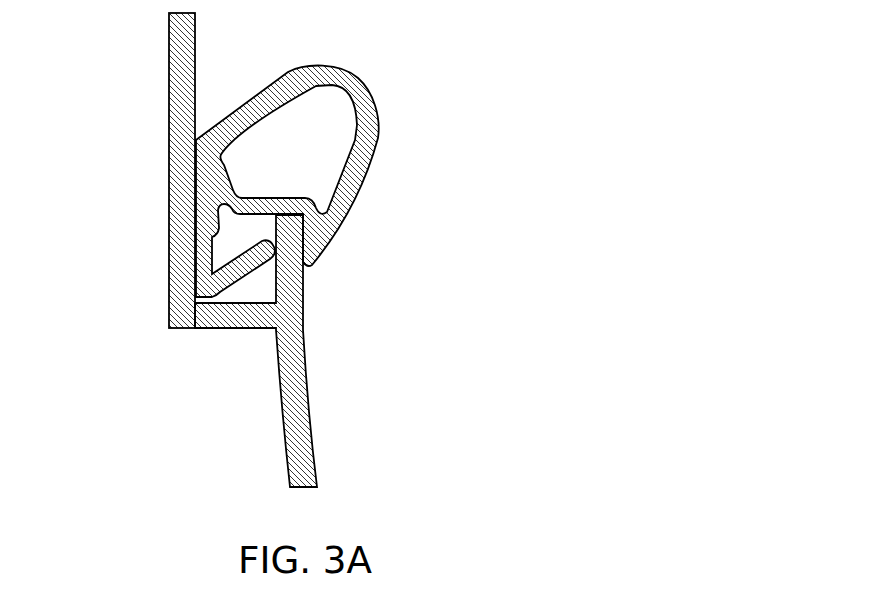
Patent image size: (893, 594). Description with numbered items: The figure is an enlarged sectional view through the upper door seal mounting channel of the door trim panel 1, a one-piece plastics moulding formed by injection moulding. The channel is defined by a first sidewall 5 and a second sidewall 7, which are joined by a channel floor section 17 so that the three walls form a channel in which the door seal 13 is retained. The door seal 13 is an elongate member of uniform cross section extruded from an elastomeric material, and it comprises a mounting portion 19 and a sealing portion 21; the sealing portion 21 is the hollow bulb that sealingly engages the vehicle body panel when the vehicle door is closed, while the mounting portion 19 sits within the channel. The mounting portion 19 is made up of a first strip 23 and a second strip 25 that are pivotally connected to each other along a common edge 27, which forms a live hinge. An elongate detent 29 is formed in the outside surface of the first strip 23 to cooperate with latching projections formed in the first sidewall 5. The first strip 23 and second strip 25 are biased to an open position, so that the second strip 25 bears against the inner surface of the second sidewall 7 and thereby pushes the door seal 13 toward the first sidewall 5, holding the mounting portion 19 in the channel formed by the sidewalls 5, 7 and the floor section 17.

The door trim panel 1 is at (322, 389).
The first sidewall 5 is at (178, 92).
The second sidewall 7 is at (290, 300).
The primary door seal 13 is at (383, 188).
The channel floor section 17 is at (220, 326).
The mounting portion 19 is at (247, 233).
The sealing portion 21 is at (393, 142).
The first strip 23 is at (205, 257).
The second strip 25 is at (253, 267).
The common edge 27 is at (205, 297).
The elongate detent 29 is at (197, 219).